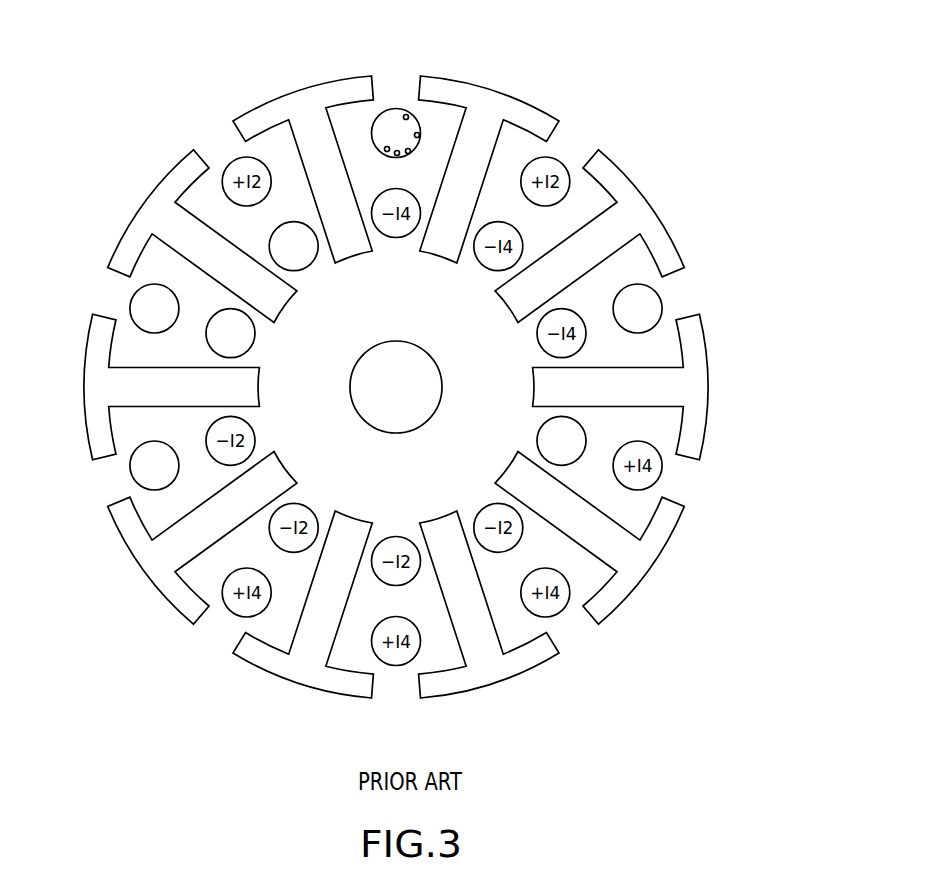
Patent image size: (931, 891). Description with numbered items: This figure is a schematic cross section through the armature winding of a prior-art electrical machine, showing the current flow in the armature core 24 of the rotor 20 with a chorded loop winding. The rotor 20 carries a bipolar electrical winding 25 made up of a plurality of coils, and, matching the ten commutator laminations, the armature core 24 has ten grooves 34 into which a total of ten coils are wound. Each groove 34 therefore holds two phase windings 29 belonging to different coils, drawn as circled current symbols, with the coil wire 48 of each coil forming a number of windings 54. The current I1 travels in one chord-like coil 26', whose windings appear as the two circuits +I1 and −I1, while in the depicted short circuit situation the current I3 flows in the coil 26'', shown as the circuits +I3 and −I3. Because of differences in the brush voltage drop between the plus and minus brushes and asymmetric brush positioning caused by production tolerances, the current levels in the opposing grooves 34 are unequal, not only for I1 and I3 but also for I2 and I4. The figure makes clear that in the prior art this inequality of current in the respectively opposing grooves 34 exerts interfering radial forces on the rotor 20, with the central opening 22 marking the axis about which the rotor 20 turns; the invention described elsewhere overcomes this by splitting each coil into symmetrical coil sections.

The rotor 20 is at (438, 407).
The rotor shaft opening 22 is at (360, 415).
The armature core 24 is at (650, 218).
The electrical winding 25 is at (382, 704).
The chord-like coil 26' is at (410, 353).
The coil 26'' is at (351, 517).
The phase windings 29 is at (128, 302).
The grooves 34 is at (590, 203).
The coil wire 48 is at (397, 107).
The windings 54 is at (572, 633).